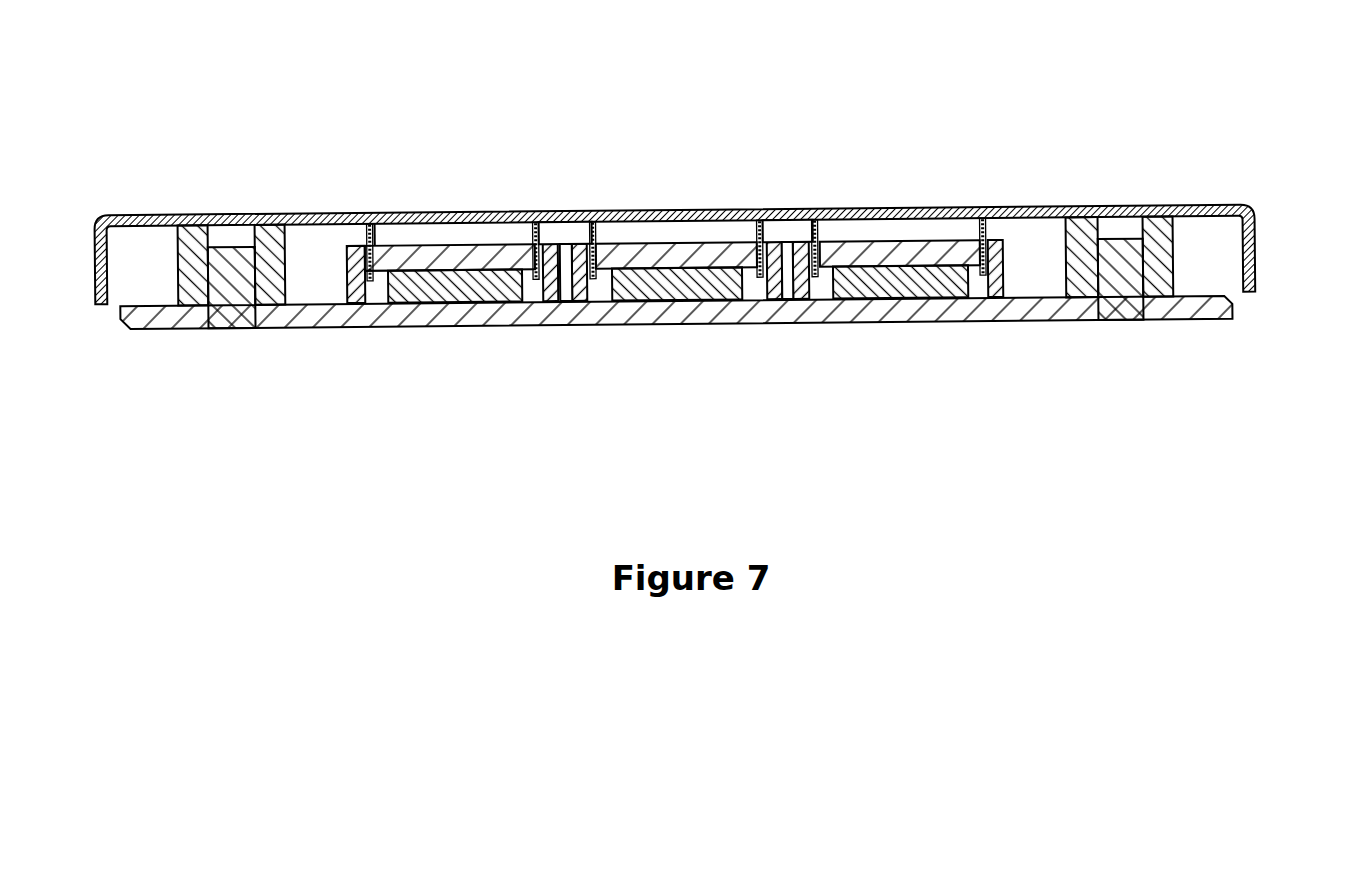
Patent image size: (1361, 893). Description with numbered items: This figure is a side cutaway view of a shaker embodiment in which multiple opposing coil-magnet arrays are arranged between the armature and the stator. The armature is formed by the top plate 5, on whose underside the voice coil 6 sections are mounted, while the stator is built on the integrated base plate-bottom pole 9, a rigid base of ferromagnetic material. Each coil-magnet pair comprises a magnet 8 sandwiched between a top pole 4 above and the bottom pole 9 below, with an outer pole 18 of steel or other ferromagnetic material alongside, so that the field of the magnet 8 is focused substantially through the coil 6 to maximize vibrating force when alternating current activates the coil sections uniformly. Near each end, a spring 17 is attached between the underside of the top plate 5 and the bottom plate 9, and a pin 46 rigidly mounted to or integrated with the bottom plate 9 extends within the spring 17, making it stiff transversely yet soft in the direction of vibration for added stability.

The top pole 4 is at (447, 250).
The top plate 5 is at (1220, 200).
The voice coil 6 is at (552, 215).
The magnet 8 is at (507, 300).
The integrated base plate-bottom pole 9 is at (323, 318).
The spring 17 is at (183, 250).
The outer pole 18 is at (333, 252).
The pin 46 is at (232, 305).